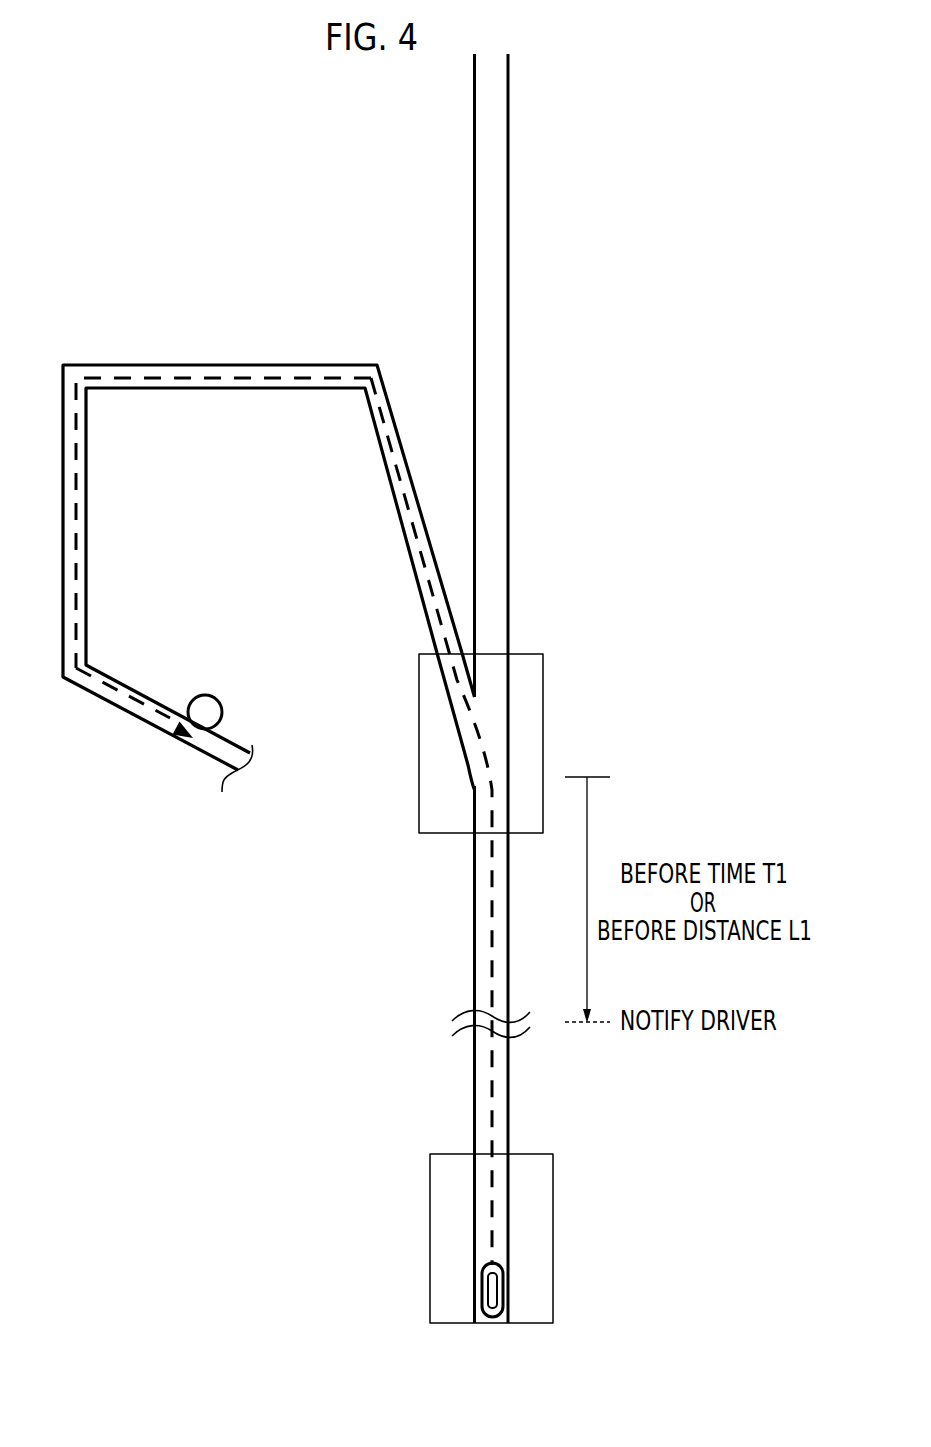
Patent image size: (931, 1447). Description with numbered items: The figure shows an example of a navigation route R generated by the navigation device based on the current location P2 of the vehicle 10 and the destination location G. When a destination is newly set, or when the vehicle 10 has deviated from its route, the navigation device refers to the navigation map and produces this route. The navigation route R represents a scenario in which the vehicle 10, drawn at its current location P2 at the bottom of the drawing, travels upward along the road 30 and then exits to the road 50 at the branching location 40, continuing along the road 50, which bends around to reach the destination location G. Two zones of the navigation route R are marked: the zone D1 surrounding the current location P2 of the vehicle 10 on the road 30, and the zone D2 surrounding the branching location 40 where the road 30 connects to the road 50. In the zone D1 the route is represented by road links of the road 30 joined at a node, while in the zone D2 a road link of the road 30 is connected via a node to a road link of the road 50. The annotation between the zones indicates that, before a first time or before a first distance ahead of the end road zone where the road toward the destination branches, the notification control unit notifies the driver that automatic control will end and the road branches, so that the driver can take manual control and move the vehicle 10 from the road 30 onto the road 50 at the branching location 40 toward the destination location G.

The vehicle 10 is at (505, 1300).
The road 30 is at (510, 438).
The branching location 40 is at (471, 779).
The road 50 is at (237, 365).
The navigation route R is at (492, 967).
The destination location G is at (198, 716).
The current location P2 is at (483, 1282).
The zone D1 is at (553, 1212).
The zone D2 is at (543, 688).